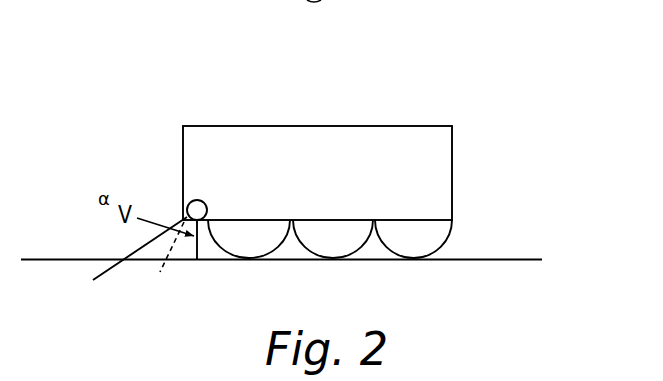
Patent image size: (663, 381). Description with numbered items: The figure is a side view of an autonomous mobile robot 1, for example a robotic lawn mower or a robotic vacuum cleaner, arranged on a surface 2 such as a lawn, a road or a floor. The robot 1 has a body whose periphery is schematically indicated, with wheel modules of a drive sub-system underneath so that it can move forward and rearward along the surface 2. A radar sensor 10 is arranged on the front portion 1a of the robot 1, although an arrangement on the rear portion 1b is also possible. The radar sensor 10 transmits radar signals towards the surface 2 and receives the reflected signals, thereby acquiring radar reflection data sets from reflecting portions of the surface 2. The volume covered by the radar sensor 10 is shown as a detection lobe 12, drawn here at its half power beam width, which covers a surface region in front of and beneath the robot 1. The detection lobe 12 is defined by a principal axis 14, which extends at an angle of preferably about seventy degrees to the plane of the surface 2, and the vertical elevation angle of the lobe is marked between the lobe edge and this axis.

The autonomous mobile robot 1 is at (321, 129).
The front portion 1a is at (168, 138).
The rear portion 1b is at (478, 152).
The radar sensor 10 is at (185, 206).
The detection lobe 12 is at (124, 256).
The principal axis 14 is at (173, 245).
The surface 2 is at (477, 302).